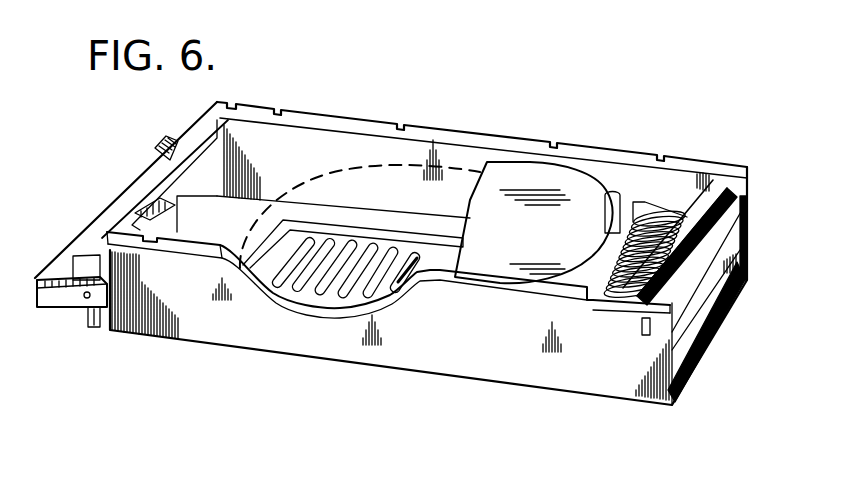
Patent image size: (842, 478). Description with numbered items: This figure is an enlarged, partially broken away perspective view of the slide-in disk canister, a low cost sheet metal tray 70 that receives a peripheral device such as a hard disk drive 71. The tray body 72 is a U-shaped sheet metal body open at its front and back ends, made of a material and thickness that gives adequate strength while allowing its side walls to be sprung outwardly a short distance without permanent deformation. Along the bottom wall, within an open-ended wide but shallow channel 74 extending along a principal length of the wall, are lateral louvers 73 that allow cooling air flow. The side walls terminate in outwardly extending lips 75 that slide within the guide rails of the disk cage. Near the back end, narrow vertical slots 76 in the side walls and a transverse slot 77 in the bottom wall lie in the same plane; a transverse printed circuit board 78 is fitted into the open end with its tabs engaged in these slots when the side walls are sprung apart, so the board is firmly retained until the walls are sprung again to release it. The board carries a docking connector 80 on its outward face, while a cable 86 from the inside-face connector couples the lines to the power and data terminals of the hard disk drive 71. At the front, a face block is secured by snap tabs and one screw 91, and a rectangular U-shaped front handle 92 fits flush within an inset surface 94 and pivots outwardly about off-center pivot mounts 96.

The sheet metal tray 70 is at (525, 352).
The hard disk drive 71 is at (550, 190).
The tray body 72 is at (650, 403).
The louvers 73 is at (310, 240).
The channel 74 is at (365, 246).
The outwardly extending lips 75 is at (710, 168).
The vertical slots 76 is at (640, 336).
The transverse slot 77 is at (702, 328).
The transverse printed circuit board 78 is at (713, 188).
The docking connector 80 is at (747, 218).
The cable 86 is at (647, 273).
The screw 91 is at (123, 254).
The front handle 92 is at (63, 257).
The inset surface 94 is at (88, 313).
The pivot mounts 96 is at (90, 298).